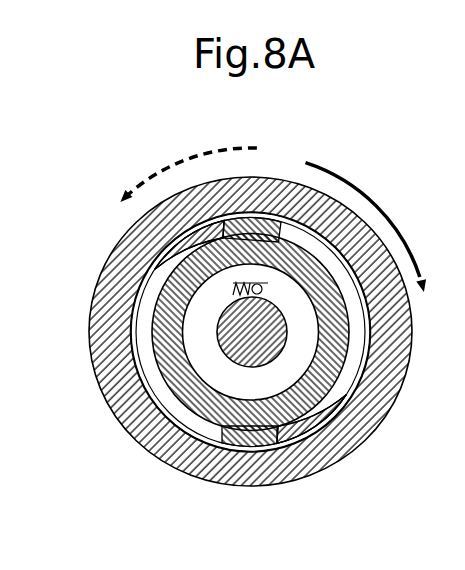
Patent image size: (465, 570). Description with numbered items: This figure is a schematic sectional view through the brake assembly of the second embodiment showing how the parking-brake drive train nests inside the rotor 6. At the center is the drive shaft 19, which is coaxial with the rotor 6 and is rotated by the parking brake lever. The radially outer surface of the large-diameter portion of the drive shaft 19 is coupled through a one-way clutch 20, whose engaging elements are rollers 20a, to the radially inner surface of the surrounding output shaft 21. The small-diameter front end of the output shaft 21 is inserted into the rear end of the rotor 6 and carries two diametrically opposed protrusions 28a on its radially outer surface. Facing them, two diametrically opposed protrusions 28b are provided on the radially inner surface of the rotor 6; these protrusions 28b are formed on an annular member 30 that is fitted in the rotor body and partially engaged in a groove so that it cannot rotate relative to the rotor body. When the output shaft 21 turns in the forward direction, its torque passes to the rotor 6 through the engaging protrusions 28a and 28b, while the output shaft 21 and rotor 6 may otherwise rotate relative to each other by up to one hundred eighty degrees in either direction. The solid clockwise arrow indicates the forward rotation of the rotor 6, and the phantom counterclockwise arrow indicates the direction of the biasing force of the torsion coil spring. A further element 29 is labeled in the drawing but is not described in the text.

The rotor 6 is at (386, 376).
The drive shaft 19 is at (220, 355).
The one-way clutch 20 is at (176, 270).
The rollers 20a is at (231, 286).
The output shaft 21 is at (150, 337).
The protrusions 28a is at (260, 216).
The protrusions 28b is at (222, 210).
The outer sleeve surface 29 is at (352, 267).
The annular member 30 is at (365, 308).